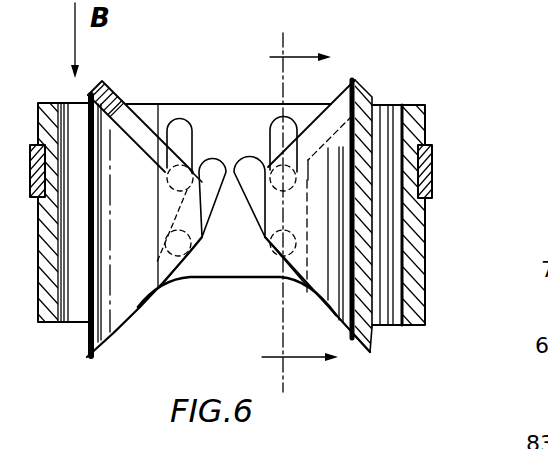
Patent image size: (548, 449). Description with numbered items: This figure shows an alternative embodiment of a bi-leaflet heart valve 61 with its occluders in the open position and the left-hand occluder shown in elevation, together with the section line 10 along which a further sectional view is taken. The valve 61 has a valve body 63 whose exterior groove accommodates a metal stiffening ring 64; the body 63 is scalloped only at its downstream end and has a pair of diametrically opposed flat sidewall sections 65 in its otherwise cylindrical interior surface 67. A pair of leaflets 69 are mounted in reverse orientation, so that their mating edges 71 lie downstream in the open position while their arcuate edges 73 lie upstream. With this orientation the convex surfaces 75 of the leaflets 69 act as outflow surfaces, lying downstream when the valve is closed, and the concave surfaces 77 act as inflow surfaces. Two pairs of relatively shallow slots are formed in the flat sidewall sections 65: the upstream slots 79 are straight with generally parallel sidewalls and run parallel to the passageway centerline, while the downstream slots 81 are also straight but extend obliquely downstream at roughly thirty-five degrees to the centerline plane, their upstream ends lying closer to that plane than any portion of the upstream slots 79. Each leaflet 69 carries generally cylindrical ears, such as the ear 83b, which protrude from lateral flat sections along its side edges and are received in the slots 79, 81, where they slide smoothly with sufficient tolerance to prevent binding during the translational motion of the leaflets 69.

The section line 10- 10 is at (300, 212).
The heart valve 61 is at (452, 123).
The valve body 63 is at (428, 240).
The metal stiffening ring 64 is at (434, 162).
The flat sidewall sections 65 is at (258, 130).
The cylindrical interior surface 67 is at (381, 127).
The leaflets 69 is at (121, 79).
The mating edges 71 is at (365, 353).
The arcuate edges 73 is at (88, 92).
The convex surfaces 75 is at (125, 290).
The concave surfaces 77 is at (310, 287).
The upstream slots 79 is at (187, 137).
The downstream slots 81 is at (257, 192).
The ear 83b is at (183, 278).